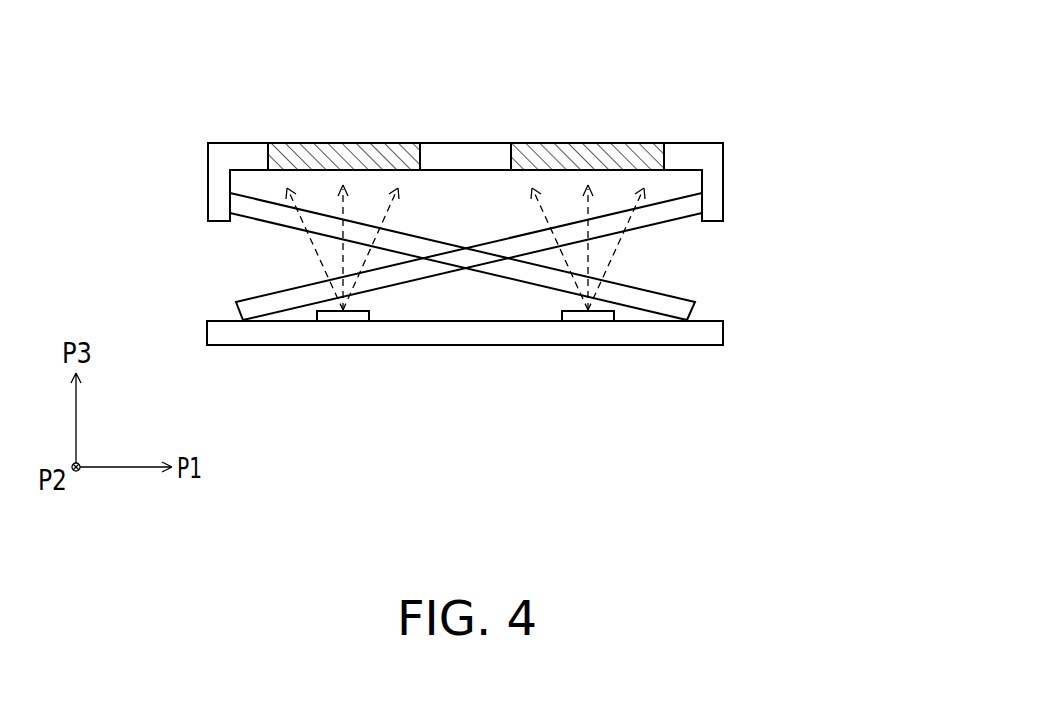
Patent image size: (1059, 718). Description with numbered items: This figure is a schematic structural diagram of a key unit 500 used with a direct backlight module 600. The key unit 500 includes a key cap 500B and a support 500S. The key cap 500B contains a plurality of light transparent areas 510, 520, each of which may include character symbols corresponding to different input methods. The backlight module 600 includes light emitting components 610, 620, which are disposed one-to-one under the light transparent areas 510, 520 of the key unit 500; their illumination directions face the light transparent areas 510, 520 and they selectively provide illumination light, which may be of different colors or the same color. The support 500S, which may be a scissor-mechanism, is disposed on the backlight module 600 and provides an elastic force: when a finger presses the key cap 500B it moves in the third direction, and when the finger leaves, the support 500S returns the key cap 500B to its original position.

The key unit 500 is at (753, 60).
The key cap 500B is at (723, 126).
The support 500S is at (693, 203).
The light transparent area 510 is at (336, 152).
The light transparent area 520 is at (559, 152).
The backlight module 600 is at (713, 333).
The light emitting component 610 is at (338, 318).
The light emitting component 620 is at (588, 318).